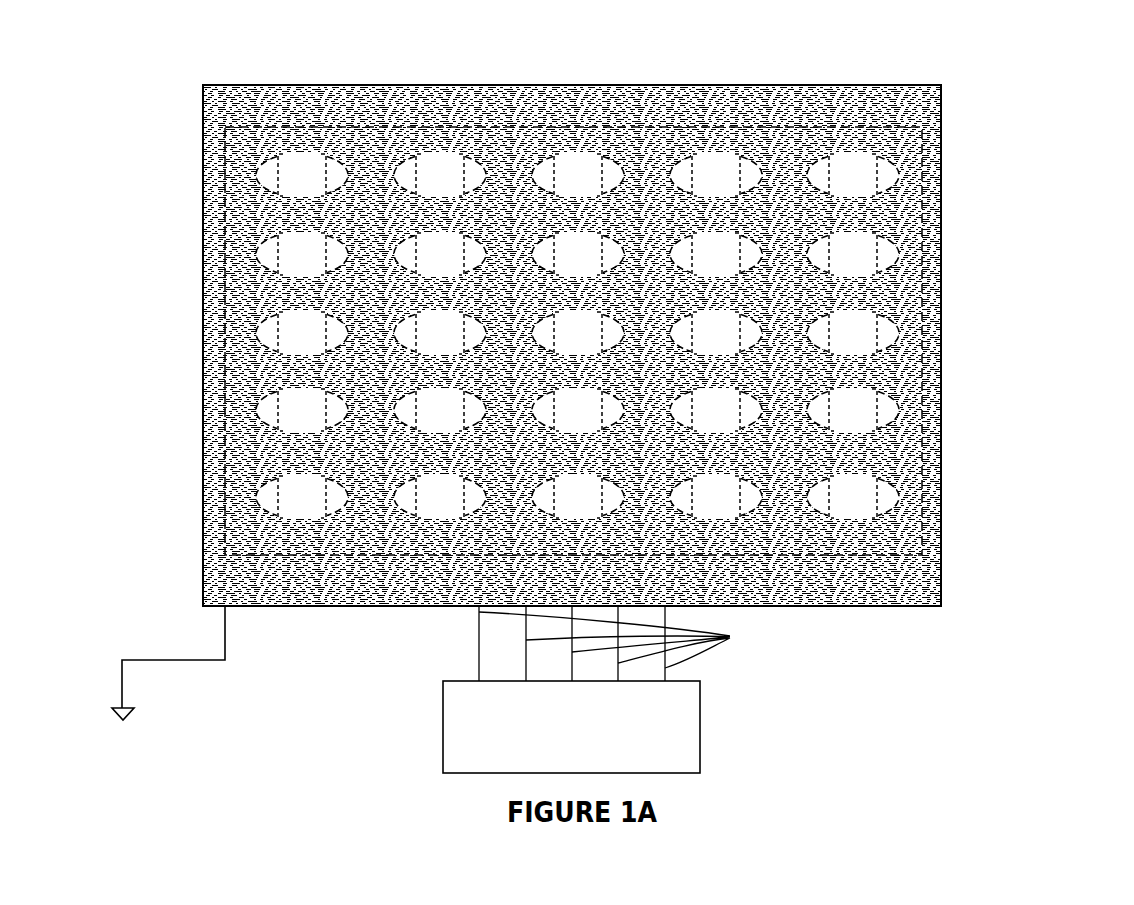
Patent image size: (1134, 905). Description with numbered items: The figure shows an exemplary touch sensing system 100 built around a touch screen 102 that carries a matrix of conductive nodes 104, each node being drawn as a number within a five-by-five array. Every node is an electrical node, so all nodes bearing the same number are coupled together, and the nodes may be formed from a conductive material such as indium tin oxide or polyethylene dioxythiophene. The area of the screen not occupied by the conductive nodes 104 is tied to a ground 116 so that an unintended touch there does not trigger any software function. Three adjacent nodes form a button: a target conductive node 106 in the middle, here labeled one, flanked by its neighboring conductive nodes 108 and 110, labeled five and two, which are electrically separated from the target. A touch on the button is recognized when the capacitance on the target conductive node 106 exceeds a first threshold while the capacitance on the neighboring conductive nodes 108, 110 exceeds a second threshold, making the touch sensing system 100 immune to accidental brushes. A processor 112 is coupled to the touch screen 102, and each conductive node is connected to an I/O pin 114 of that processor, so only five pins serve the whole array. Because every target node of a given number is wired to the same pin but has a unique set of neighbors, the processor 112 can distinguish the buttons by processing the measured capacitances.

The touch sensing system 100 is at (815, 724).
The touch screen 102 is at (941, 320).
The conductive nodes 104 is at (599, 269).
The target conductive node 106 is at (290, 162).
The neighboring conductive nodes 108 is at (285, 150).
The neighboring conductive nodes 110 is at (347, 173).
The processor 112 is at (571, 727).
The I/O pin 114 is at (670, 643).
The ground 116 is at (153, 681).